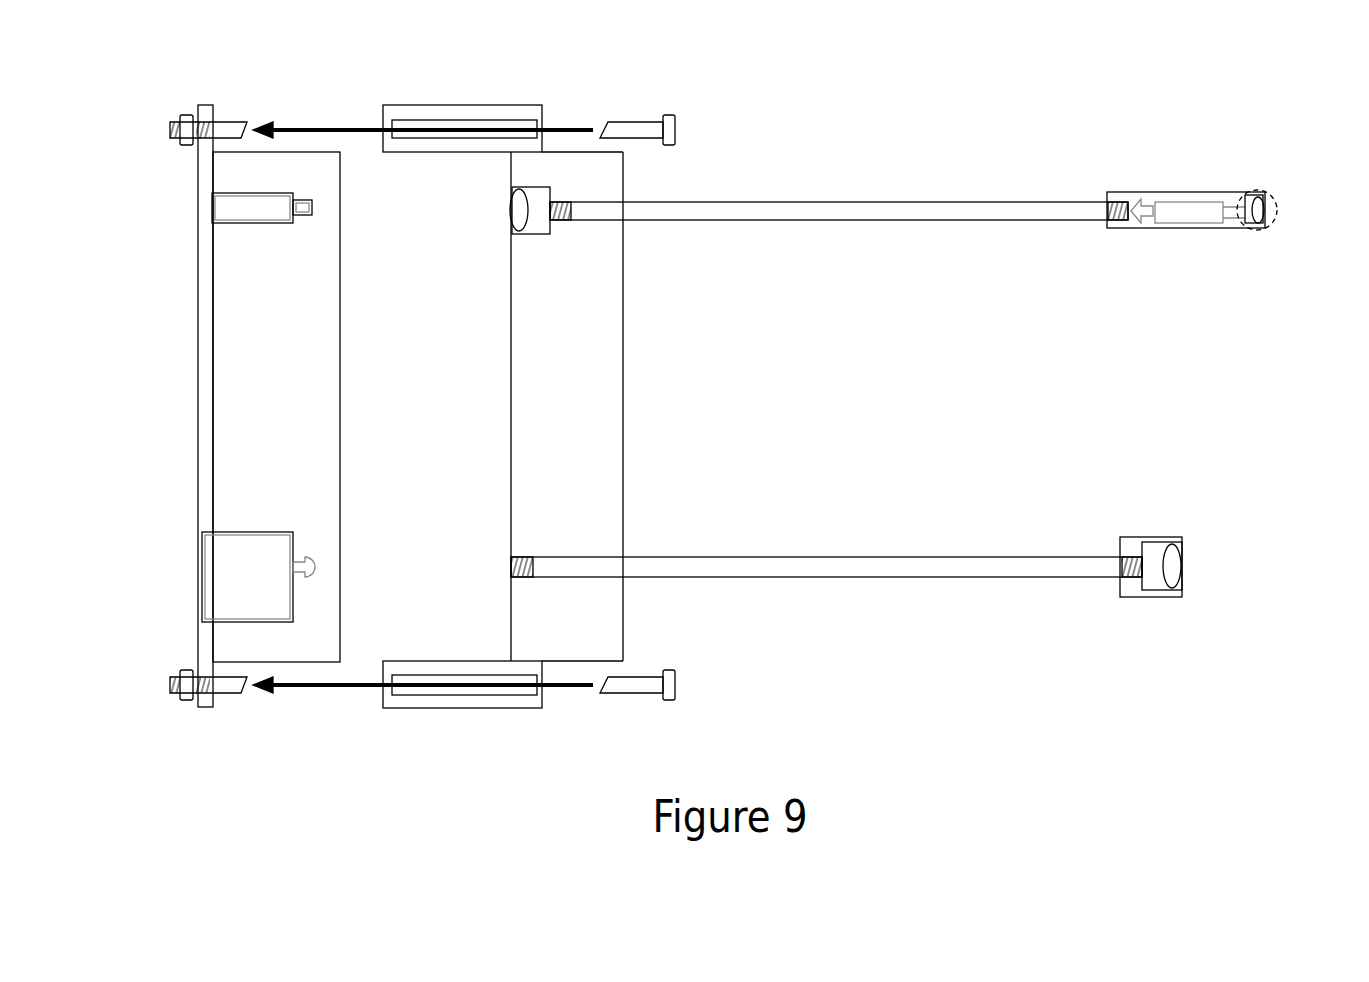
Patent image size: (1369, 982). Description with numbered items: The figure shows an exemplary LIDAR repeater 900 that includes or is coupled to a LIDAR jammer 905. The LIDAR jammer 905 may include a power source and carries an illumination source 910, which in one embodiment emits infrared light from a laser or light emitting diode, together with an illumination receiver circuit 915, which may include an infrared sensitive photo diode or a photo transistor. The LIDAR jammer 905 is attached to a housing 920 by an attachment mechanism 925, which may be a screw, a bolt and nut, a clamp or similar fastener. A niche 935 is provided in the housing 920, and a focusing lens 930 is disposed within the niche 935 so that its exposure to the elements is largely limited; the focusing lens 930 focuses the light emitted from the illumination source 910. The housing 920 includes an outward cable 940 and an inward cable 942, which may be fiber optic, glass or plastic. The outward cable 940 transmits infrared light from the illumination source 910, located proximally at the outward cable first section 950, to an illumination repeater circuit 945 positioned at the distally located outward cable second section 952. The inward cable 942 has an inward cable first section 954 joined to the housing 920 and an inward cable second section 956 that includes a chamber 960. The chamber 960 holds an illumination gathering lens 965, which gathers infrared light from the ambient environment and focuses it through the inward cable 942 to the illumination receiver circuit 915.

The LIDAR repeater 900 is at (292, 67).
The LIDAR jammer 905 is at (186, 382).
The illumination source 910 is at (228, 208).
The illumination receiver circuit 915 is at (207, 577).
The housing 920 is at (497, 444).
The attachment mechanism 925 is at (636, 122).
The focusing lens 930 is at (510, 213).
The niche 935 is at (537, 188).
The outward cable 940 is at (893, 202).
The inward cable 942 is at (938, 567).
The illumination repeater circuit 945 is at (1257, 210).
The outward cable first section 950 is at (577, 220).
The outward cable second section 952 is at (1043, 220).
The inward cable first section 954 is at (540, 557).
The inward cable second section 956 is at (1108, 557).
The chamber 960 is at (1140, 588).
The illumination gathering lens 965 is at (1172, 566).